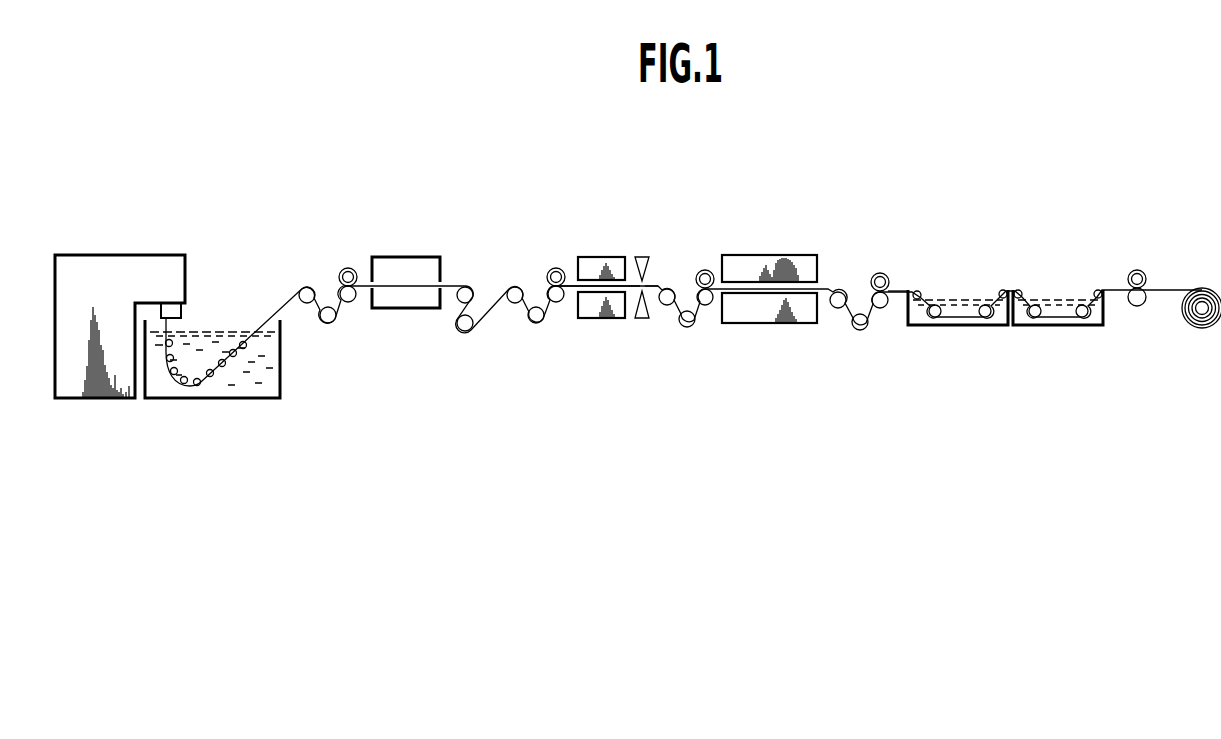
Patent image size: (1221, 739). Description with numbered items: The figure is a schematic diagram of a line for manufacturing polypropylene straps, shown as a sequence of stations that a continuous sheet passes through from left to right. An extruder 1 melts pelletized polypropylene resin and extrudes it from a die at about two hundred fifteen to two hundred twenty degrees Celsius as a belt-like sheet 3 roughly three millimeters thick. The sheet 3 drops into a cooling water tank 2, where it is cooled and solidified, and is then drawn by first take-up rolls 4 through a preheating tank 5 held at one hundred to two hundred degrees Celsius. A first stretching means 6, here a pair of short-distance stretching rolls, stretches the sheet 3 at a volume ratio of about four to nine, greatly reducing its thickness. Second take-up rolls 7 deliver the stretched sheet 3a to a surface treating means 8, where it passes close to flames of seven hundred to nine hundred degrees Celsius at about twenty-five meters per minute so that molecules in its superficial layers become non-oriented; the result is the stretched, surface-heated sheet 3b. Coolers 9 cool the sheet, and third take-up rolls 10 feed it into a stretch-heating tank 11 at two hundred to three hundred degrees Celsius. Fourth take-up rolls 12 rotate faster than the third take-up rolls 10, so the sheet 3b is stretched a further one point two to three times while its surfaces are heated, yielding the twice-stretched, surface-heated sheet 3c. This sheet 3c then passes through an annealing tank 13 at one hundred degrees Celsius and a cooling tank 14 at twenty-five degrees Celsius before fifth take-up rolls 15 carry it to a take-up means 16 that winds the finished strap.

The extruder 1 is at (94, 255).
The cooling water tank 2 is at (283, 363).
The belt-like sheet 3 is at (277, 311).
The stretched sheet 3a is at (567, 283).
The stretched, surface-heated sheet 3b is at (659, 286).
The twice-stretched and surface-heated sheet 3c is at (910, 290).
The first take-up rolls 4 is at (337, 270).
The preheating tank 5 is at (392, 309).
The first stretching means 6 is at (468, 336).
The second take-up rolls 7 is at (539, 272).
The surface treating means 8 is at (600, 319).
The coolers 9 is at (642, 257).
The third take-up rolls 10 is at (702, 268).
The stretch-heating tank 11 is at (763, 257).
The fourth take-up rolls 12 is at (871, 270).
The annealing tank 13 is at (962, 326).
The cooling tank 14 is at (1058, 326).
The fifth take-up rolls 15 is at (1135, 264).
The take-up means 16 is at (1208, 288).